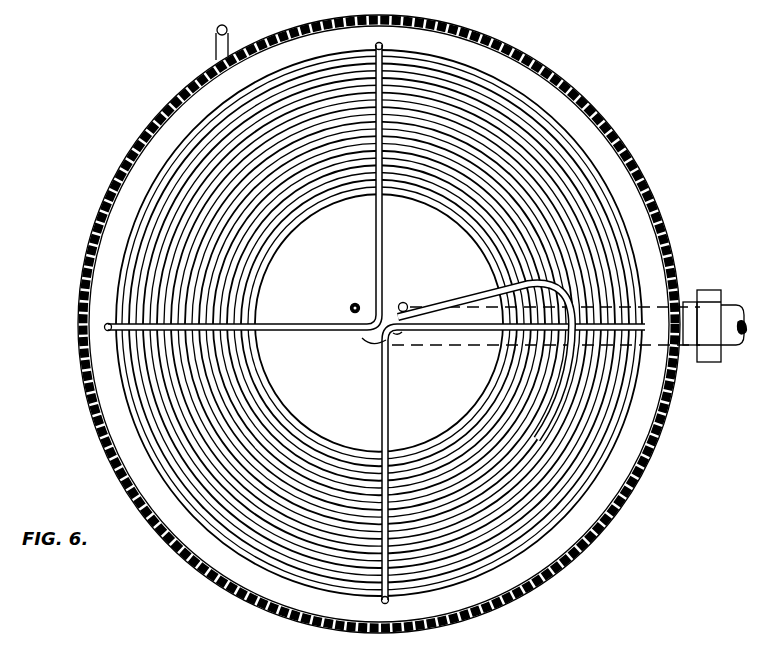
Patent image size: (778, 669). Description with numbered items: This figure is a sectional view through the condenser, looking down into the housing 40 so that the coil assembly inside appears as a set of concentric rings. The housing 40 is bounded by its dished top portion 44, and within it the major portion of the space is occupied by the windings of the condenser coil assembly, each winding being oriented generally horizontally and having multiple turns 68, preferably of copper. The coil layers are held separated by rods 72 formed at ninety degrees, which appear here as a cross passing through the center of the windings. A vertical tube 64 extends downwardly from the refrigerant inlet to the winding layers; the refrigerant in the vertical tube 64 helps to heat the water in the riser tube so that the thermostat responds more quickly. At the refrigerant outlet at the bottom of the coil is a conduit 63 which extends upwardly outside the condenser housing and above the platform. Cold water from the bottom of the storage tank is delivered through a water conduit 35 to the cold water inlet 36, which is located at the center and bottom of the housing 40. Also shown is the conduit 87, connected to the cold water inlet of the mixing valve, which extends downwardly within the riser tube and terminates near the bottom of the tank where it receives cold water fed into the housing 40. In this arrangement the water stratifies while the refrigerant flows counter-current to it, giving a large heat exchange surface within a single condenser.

The water conduit 35 is at (743, 346).
The cold water inlet 36 is at (367, 344).
The housing 40 is at (80, 272).
The dished top portion 44 is at (119, 160).
The conduit 63 is at (213, 29).
The vertical tube 64 is at (463, 290).
The turns 68 is at (530, 140).
The rods 72 is at (383, 280).
The conduit 87 is at (353, 303).